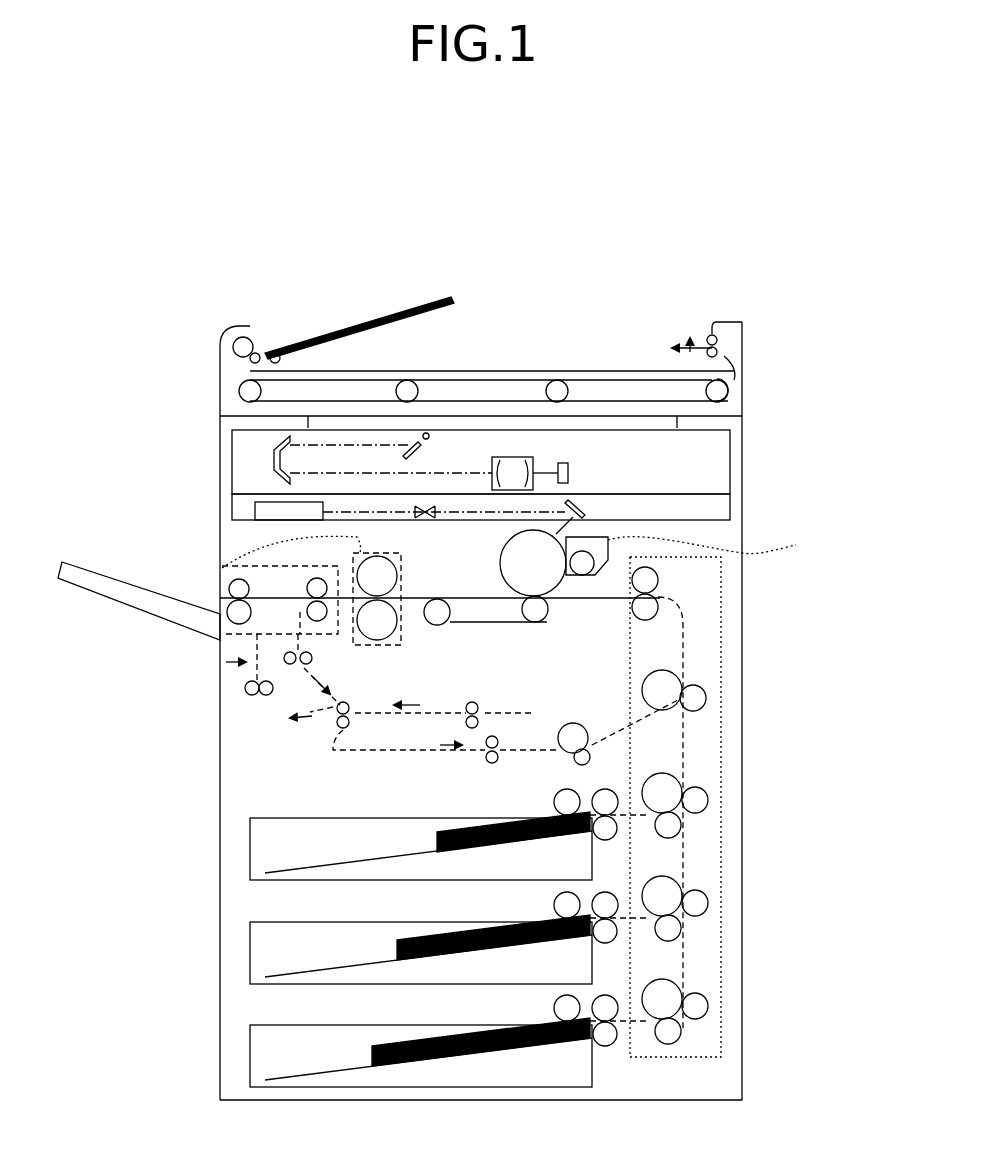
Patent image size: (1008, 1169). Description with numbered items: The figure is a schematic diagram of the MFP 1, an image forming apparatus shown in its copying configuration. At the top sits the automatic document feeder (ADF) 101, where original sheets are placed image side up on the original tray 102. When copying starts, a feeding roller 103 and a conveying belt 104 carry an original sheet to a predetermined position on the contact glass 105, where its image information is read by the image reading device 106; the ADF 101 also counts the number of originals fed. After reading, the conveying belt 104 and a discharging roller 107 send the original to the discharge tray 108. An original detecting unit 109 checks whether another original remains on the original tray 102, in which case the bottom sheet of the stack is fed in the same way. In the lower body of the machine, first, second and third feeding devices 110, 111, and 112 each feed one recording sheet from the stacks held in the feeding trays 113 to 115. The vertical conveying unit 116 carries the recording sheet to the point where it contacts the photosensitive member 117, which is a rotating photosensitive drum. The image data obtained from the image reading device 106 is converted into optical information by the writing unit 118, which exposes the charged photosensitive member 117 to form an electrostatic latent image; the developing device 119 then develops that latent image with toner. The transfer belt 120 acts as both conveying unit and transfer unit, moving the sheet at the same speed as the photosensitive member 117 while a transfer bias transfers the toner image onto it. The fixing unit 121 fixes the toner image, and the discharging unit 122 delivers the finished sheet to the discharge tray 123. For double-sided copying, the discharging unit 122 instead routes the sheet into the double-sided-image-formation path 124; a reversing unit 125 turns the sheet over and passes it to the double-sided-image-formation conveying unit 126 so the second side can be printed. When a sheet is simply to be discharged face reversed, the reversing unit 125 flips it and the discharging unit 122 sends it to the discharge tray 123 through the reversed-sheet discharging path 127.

The MFP 1 is at (788, 154).
The automatic document feeder 101 is at (748, 384).
The original tray 102 is at (364, 318).
The feeding roller 103 is at (262, 334).
The conveying belt 104 is at (538, 370).
The contact glass 105 is at (619, 416).
The image reading device 106 is at (731, 462).
The discharging roller 107 is at (694, 336).
The discharge tray 108 is at (598, 378).
The original detecting unit 109 is at (281, 357).
The first feeding device 110 is at (542, 782).
The second feeding device 111 is at (542, 886).
The third feeding device 112 is at (542, 992).
The feeding tray 113 is at (248, 843).
The feeding tray 114 is at (248, 951).
The feeding tray 115 is at (248, 1053).
The vertical conveying unit 116 is at (725, 610).
The photosensitive member 117 is at (565, 580).
The writing unit 118 is at (731, 504).
The developing device 119 is at (727, 547).
The transfer belt 120 is at (502, 625).
The fixing unit 121 is at (220, 568).
The discharging unit 122 is at (222, 656).
The discharge tray 123 is at (80, 562).
The double-sided-image-formation path 124 is at (328, 658).
The reversing unit 125 is at (434, 708).
The double-sided-image-formation conveying unit 126 is at (395, 760).
The reversed-sheet discharging path 127 is at (220, 665).